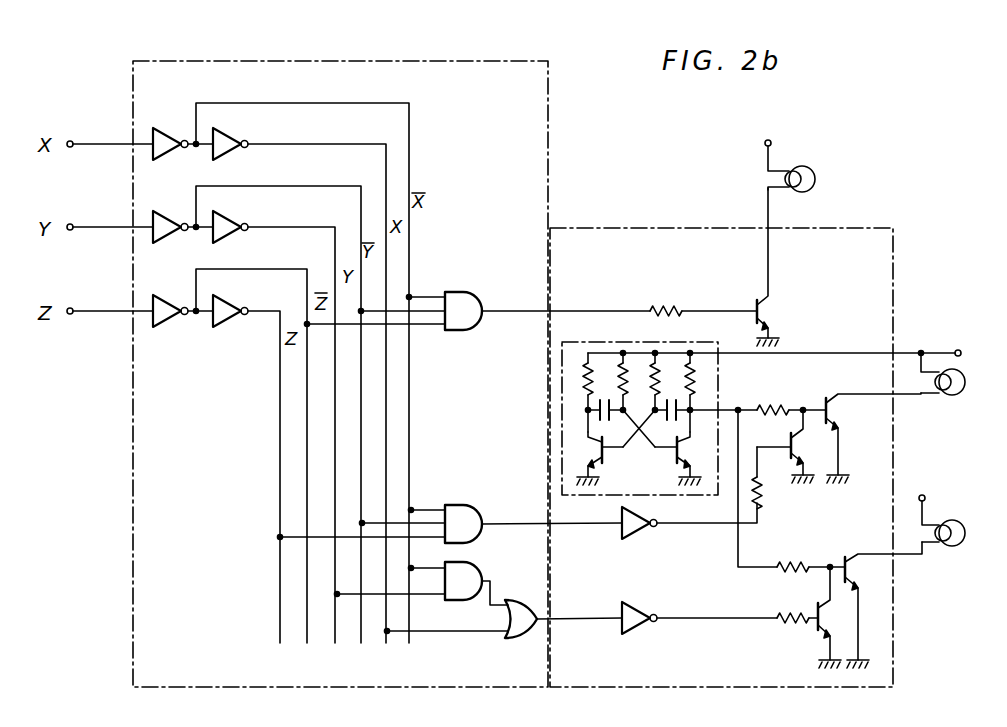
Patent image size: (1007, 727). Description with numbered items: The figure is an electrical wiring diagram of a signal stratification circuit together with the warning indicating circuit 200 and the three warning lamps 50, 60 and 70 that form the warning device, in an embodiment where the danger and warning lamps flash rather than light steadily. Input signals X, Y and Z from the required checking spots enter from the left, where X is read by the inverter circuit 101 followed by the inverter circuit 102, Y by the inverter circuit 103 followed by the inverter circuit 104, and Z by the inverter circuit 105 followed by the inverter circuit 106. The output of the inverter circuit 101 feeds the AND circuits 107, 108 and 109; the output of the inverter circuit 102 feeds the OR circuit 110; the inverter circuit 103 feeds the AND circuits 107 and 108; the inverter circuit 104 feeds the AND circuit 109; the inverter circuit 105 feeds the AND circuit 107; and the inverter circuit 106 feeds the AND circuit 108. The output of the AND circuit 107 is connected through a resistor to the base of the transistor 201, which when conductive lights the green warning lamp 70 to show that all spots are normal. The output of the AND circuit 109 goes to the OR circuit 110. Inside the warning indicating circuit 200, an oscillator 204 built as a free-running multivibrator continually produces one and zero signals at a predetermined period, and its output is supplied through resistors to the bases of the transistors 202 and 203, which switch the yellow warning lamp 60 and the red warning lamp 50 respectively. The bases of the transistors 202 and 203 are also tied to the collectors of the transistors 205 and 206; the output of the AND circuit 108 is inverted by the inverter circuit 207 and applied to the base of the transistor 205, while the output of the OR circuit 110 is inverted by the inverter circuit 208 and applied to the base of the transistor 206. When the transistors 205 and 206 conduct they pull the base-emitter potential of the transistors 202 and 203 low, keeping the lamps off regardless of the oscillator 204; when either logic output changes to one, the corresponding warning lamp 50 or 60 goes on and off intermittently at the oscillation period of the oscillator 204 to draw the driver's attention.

The red warning lamp 50 is at (950, 547).
The yellow warning lamp 60 is at (950, 396).
The green warning lamp 70 is at (813, 191).
The inverter circuit 101 is at (163, 128).
The inverter circuit 102 is at (227, 140).
The inverter circuit 103 is at (163, 212).
The inverter circuit 104 is at (231, 222).
The inverter circuit 105 is at (163, 297).
The inverter circuit 106 is at (230, 308).
The AND circuit 107 is at (455, 292).
The AND circuit 108 is at (470, 505).
The AND circuit 109 is at (483, 579).
The OR circuit 110 is at (514, 641).
The warning indicating circuit 200 is at (600, 227).
The transistor 201 is at (770, 310).
The transistor 202 is at (848, 405).
The transistor 203 is at (862, 567).
The oscillator 204 is at (630, 343).
The transistor 205 is at (800, 452).
The transistor 206 is at (824, 626).
The inverter circuit 207 is at (645, 540).
The inverter circuit 208 is at (641, 631).